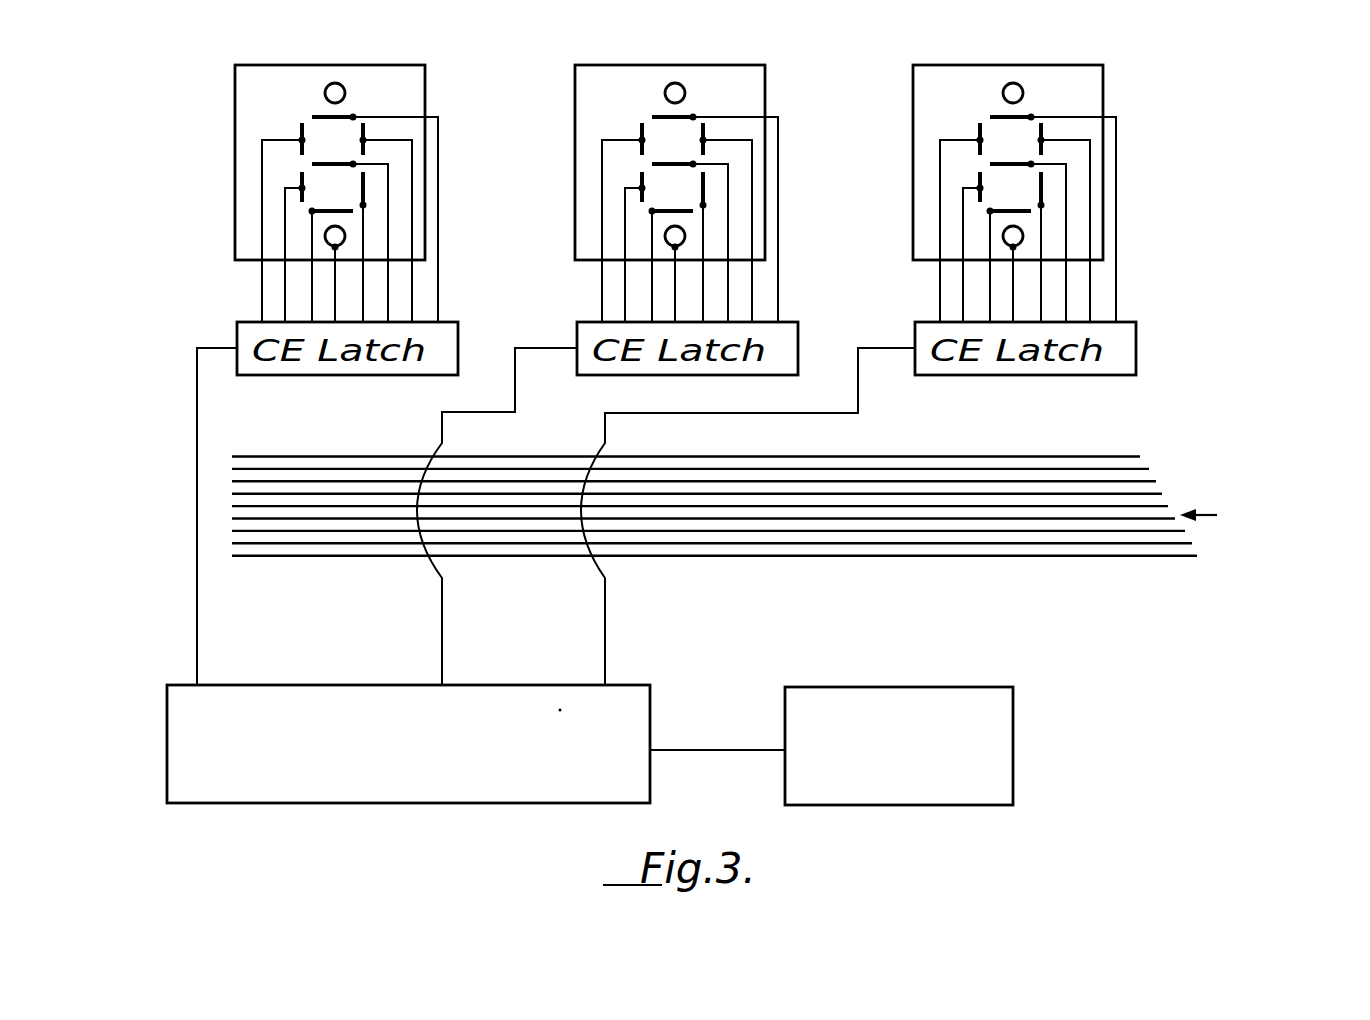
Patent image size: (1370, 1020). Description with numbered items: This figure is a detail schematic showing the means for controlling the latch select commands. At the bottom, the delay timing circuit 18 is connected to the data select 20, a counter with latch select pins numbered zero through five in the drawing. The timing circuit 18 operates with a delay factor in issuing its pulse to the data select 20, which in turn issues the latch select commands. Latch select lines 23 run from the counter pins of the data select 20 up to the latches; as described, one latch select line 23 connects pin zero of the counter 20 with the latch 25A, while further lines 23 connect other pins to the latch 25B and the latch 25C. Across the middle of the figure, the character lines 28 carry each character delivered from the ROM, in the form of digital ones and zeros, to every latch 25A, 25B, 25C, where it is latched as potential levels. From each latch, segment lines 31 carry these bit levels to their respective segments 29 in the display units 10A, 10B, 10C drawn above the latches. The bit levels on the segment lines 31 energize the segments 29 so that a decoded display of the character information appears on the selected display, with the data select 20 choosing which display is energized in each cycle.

The button 10A is at (339, 84).
The button 10B is at (679, 84).
The button 10C is at (1017, 84).
The delay timing circuit 18 is at (1000, 703).
The data select 20 is at (637, 723).
The latch select line 23 is at (197, 623).
The latch 25A is at (437, 330).
The latch 25B is at (777, 330).
The latch 25C is at (1123, 332).
The character lines 28 is at (1103, 457).
The segments 29 is at (1000, 116).
The segment lines 31 is at (1152, 283).